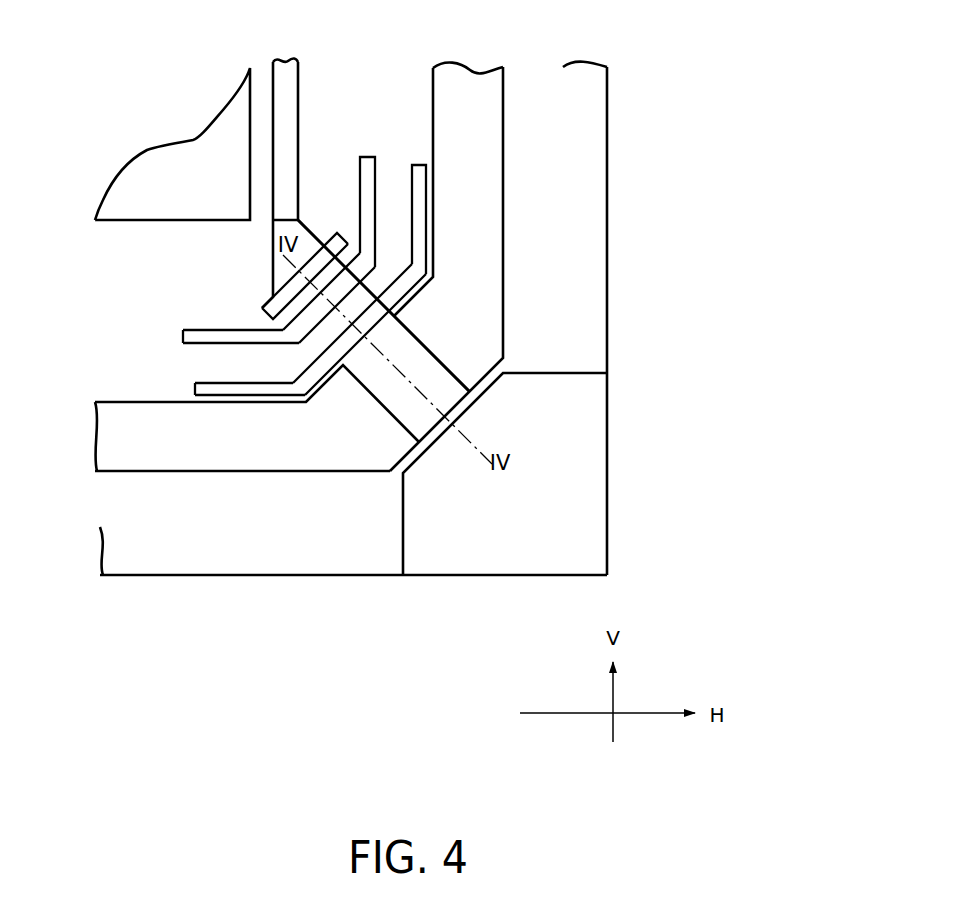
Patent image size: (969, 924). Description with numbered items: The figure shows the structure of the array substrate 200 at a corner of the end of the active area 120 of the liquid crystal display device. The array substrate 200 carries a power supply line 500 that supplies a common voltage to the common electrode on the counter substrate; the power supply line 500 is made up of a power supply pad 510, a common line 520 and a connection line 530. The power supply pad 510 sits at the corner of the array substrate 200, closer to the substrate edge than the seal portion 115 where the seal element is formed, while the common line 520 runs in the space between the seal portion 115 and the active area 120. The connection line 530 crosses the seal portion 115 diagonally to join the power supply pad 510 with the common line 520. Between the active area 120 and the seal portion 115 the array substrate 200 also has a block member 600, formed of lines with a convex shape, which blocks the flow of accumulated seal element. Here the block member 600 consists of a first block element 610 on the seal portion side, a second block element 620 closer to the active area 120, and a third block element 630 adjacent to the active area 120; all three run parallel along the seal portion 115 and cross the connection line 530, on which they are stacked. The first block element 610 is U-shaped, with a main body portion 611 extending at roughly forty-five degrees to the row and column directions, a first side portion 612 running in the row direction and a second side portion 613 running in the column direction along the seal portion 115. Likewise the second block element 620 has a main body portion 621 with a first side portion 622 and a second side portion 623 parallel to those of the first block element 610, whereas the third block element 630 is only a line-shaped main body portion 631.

The seal portion 115 is at (474, 70).
The active area 120 is at (173, 152).
The array substrate 200 is at (608, 155).
The power supply line 500 is at (386, 416).
The power supply pad 510 is at (608, 420).
The common line 520 is at (289, 59).
The connection line 530 is at (422, 358).
The block member 600 is at (78, 283).
The first block element 610 is at (328, 309).
The main body portion 611 is at (410, 278).
The first side portion 612 is at (243, 398).
The second side portion 613 is at (420, 204).
The second block element 620 is at (243, 246).
The main body portion 621 is at (360, 258).
The first side portion 622 is at (300, 347).
The second side portion 623 is at (370, 155).
The third block element 630 is at (216, 239).
The main body portion 631 is at (343, 242).